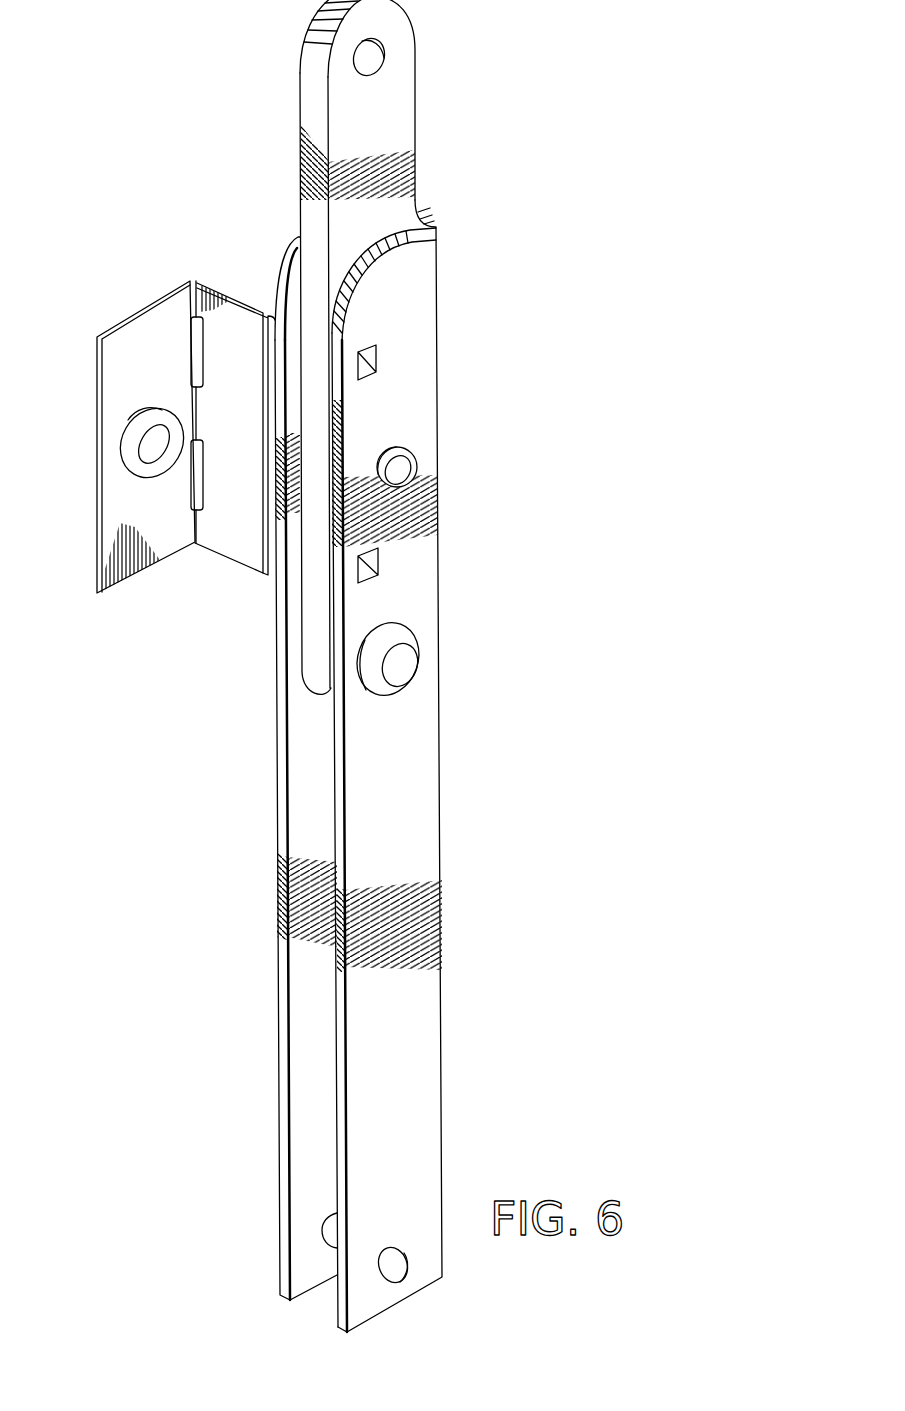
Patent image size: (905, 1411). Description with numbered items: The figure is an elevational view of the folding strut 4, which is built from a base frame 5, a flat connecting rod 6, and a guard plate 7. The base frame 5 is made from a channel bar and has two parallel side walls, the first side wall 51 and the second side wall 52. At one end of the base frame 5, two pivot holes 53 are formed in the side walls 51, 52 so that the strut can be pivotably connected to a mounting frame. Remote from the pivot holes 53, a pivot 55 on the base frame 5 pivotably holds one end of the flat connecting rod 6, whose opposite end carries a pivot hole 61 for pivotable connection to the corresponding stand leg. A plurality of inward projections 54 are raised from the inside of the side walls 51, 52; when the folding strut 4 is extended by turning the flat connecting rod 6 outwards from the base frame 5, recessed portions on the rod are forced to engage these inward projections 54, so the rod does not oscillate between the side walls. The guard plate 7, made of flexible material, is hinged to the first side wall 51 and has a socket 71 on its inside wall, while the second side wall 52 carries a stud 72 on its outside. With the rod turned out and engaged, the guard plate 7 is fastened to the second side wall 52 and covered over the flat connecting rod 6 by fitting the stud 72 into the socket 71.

The folding strut 4 is at (448, 296).
The base frame 5 is at (400, 421).
The flat connecting rod 6 is at (322, 90).
The guard plate 7 is at (163, 360).
The first side wall 51 is at (298, 970).
The second side wall 52 is at (388, 1072).
The pivot holes 53 is at (322, 1242).
The inward projections 54 is at (378, 350).
The pivot 55 is at (367, 672).
The pivot hole 61 is at (372, 64).
The socket 71 is at (123, 449).
The stud 72 is at (417, 490).